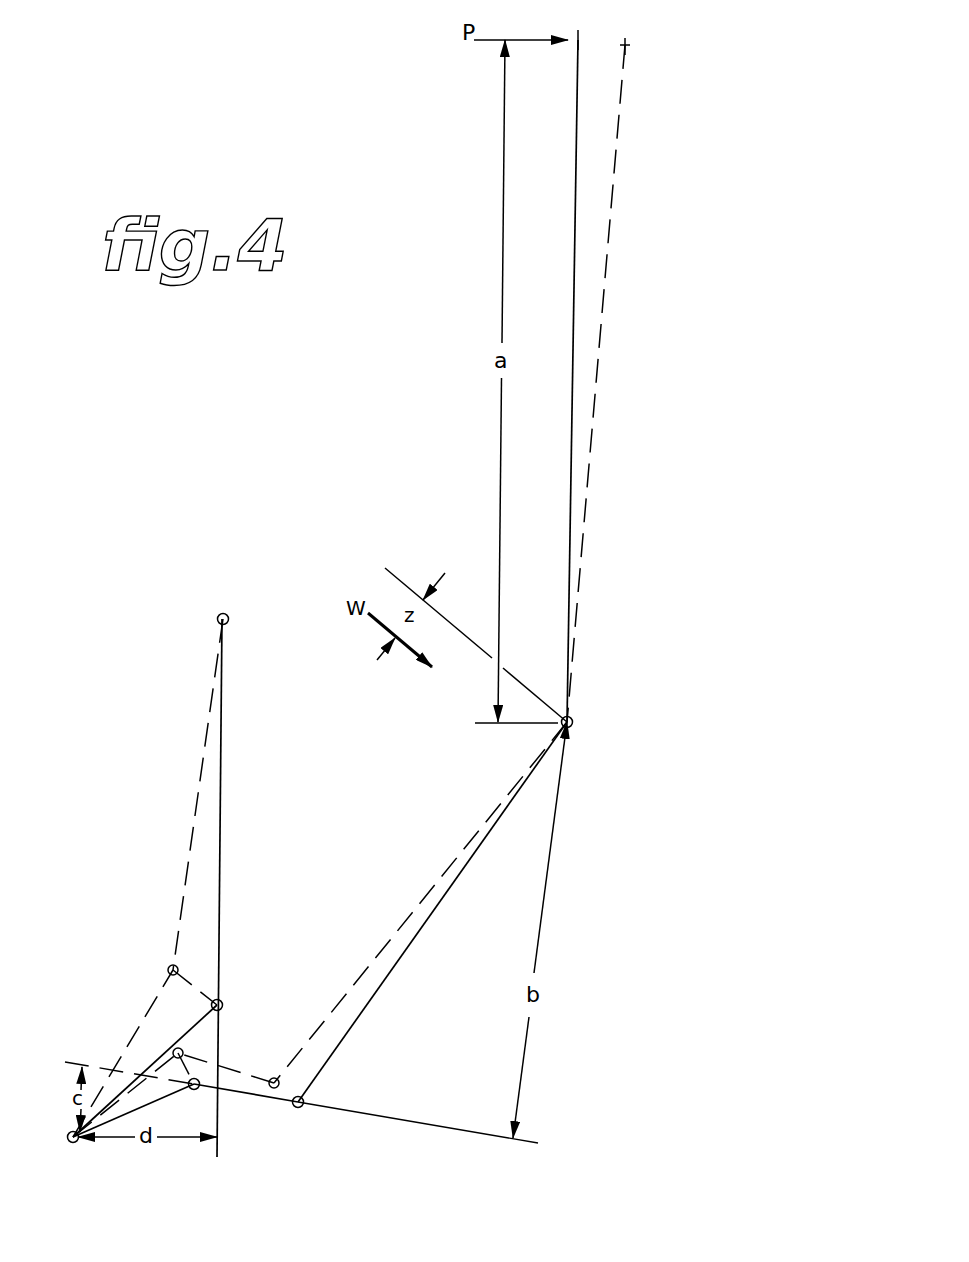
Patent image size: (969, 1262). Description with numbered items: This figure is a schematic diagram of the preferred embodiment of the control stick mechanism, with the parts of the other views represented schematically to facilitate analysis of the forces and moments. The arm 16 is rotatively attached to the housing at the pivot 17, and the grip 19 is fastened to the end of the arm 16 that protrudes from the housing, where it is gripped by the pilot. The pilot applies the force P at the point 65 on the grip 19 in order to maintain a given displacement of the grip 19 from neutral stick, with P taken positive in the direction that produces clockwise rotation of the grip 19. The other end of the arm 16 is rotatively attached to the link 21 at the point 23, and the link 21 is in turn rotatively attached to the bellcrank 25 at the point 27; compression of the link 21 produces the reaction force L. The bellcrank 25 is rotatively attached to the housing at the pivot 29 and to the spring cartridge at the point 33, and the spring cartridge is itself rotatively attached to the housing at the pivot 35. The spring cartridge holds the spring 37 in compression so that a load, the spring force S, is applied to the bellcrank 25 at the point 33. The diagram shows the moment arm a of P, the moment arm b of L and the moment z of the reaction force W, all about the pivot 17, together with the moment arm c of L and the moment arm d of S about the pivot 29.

The arm 16 is at (570, 520).
The pivot 17 is at (573, 719).
The grip 19 is at (576, 228).
The link 21 is at (240, 1096).
The point 23 is at (306, 1098).
The bellcrank 25 is at (199, 1023).
The point 27 is at (192, 1091).
The pivot 29 is at (67, 1137).
The point 33 is at (222, 1000).
The pivot 35 is at (228, 619).
The spring 37 is at (221, 789).
The point 65 is at (579, 40).